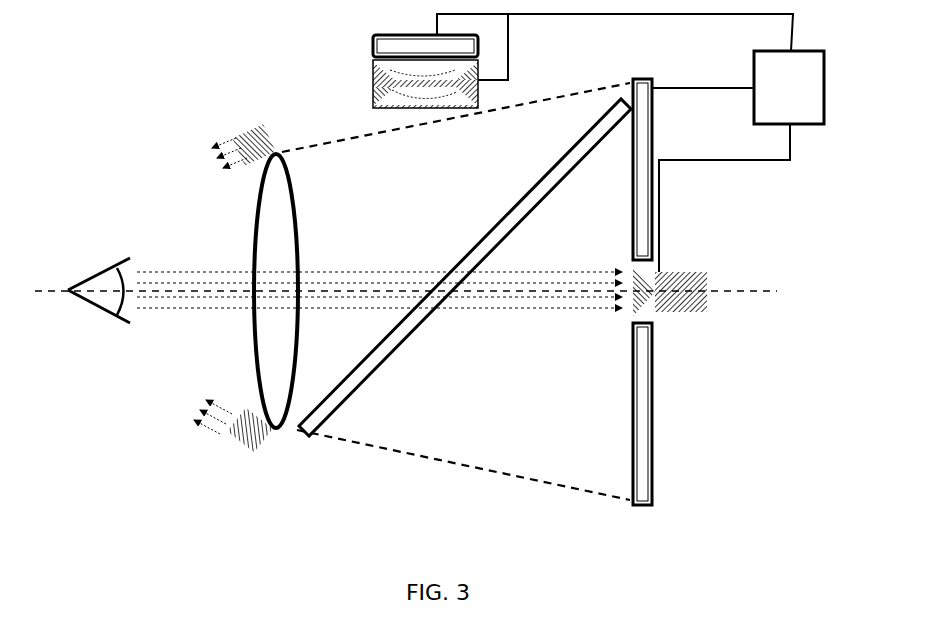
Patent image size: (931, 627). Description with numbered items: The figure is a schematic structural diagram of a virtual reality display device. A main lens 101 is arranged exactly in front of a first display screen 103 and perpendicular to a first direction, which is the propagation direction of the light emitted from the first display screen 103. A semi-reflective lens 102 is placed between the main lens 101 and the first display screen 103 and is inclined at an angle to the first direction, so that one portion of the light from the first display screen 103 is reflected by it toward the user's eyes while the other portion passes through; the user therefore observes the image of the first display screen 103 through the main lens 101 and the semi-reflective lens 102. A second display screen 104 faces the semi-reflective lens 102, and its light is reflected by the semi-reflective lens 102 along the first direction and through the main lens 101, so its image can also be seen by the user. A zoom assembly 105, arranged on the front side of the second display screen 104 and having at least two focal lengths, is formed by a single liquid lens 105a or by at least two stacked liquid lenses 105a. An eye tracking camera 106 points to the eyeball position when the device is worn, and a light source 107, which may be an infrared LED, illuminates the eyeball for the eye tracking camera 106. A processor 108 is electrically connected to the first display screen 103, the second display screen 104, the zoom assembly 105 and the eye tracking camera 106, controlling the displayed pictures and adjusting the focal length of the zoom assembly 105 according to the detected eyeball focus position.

The main lens 101 is at (288, 422).
The semi-reflective lens 102 is at (525, 130).
The first display screen 103 is at (628, 434).
The second display screen 104 is at (365, 48).
The zoom assembly 105 is at (365, 78).
The liquid lens 105a is at (427, 97).
The eye tracking camera 106 is at (715, 272).
The light source 107 is at (252, 130).
The processor 108 is at (789, 87).